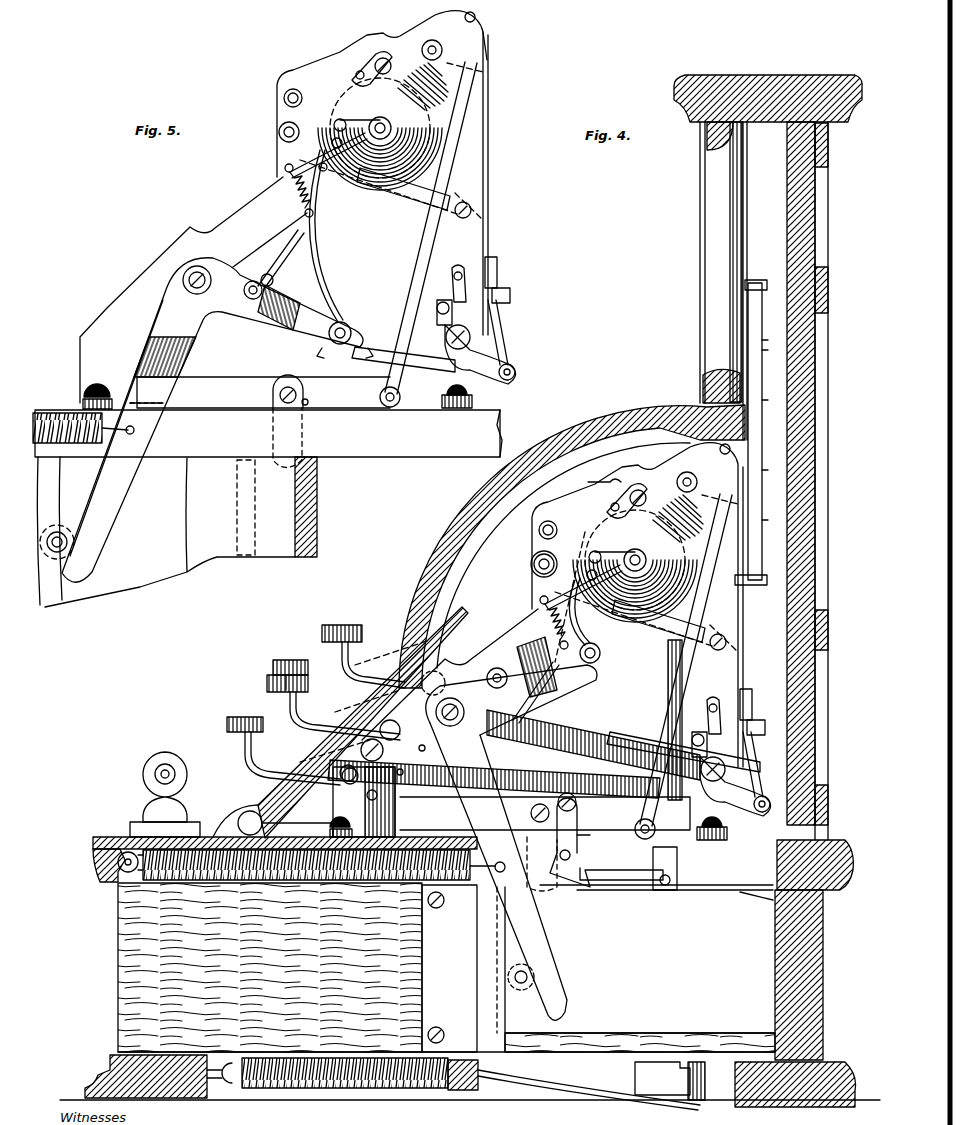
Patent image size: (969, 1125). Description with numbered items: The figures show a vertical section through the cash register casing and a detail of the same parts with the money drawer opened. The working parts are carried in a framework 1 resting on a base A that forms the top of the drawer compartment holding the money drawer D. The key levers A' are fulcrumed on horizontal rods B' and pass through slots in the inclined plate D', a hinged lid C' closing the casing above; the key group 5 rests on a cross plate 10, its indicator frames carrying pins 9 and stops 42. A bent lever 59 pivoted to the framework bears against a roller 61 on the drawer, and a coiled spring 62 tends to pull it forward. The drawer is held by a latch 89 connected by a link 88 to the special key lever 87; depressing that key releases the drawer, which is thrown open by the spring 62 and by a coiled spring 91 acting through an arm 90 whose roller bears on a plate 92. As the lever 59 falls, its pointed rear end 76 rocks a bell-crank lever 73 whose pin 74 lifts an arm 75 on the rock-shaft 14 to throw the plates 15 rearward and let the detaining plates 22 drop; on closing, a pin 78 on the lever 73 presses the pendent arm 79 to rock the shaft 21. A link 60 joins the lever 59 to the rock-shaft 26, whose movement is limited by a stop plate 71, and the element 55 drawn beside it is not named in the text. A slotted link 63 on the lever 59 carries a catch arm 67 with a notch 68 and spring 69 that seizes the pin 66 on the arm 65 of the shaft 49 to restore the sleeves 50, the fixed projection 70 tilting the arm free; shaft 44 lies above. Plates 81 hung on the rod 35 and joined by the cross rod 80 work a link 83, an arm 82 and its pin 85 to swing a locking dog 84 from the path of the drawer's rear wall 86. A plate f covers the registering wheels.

In FIG. 5, the framework 1 is at (284, 207).
In FIG. 4, the framework 1 is at (556, 605).
In FIG. 4, the key group 5 is at (218, 724).
In FIG. 4, the rearwardly projecting pin 9 is at (768, 520).
In FIG. 4, the cross plate 10 is at (760, 588).
In FIG. 5, the rock-shaft 14 is at (512, 378).
In FIG. 4, the rock-shaft 14 is at (766, 792).
In FIG. 5, the plate 15 is at (510, 296).
In FIG. 4, the plate 15 is at (763, 725).
In FIG. 5, the shaft 21 is at (462, 262).
In FIG. 4, the shaft 21 is at (719, 704).
In FIG. 5, the detaining plate 22 is at (497, 272).
In FIG. 4, the detaining plate 22 is at (760, 704).
In FIG. 5, the rock-shaft 26 is at (392, 128).
In FIG. 4, the rock-shaft 26 is at (635, 560).
In FIG. 5, the rod 35 is at (428, 40).
In FIG. 4, the rod 35 is at (700, 477).
In FIG. 4, the stop 42 is at (661, 720).
In FIG. 5, the shaft 44 is at (283, 95).
In FIG. 4, the shaft 44 is at (533, 526).
In FIG. 5, the rock-shaft 49 is at (278, 132).
In FIG. 4, the rock-shaft 49 is at (530, 569).
In FIG. 4, the sleeve 50 is at (532, 564).
In FIG. 5, the spring 55 is at (385, 200).
In FIG. 4, the spring 55 is at (638, 579).
In FIG. 5, the bent lever 59 is at (116, 428).
In FIG. 4, the bent lever 59 is at (498, 871).
In FIG. 5, the link 60 is at (318, 270).
In FIG. 4, the link 60 is at (553, 637).
In FIG. 5, the roller 61 is at (67, 540).
In FIG. 4, the roller 61 is at (527, 988).
In FIG. 5, the coiled spring 62 is at (70, 412).
In FIG. 4, the coiled spring 62 is at (205, 880).
In FIG. 5, the link 63 is at (274, 264).
In FIG. 4, the link 63 is at (540, 660).
In FIG. 5, the arm 65 is at (333, 140).
In FIG. 4, the arm 65 is at (553, 559).
In FIG. 5, the pin 66 is at (330, 166).
In FIG. 5, the catch arm 67 is at (290, 168).
In FIG. 4, the catch arm 67 is at (583, 574).
In FIG. 5, the notch 68 is at (353, 114).
In FIG. 4, the notch 68 is at (612, 543).
In FIG. 5, the spring 69 is at (292, 190).
In FIG. 4, the spring 69 is at (550, 616).
In FIG. 5, the fixed projection 70 is at (352, 78).
In FIG. 4, the fixed projection 70 is at (616, 501).
In FIG. 5, the stop plate 71 is at (414, 193).
In FIG. 4, the stop plate 71 is at (669, 625).
In FIG. 5, the bell-crank lever 73 is at (425, 358).
In FIG. 4, the bell-crank lever 73 is at (683, 751).
In FIG. 5, the pin 74 is at (457, 392).
In FIG. 4, the pin 74 is at (720, 827).
In FIG. 5, the arm 75 is at (508, 364).
In FIG. 4, the arm 75 is at (735, 786).
In FIG. 5, the pointed rear end 76 is at (352, 328).
In FIG. 4, the pointed rear end 76 is at (600, 660).
In FIG. 5, the pin 78 is at (437, 295).
In FIG. 4, the pin 78 is at (697, 733).
In FIG. 5, the pendent arm 79 is at (496, 325).
In FIG. 4, the pendent arm 79 is at (761, 764).
In FIG. 5, the cross rod 80 is at (476, 17).
In FIG. 4, the cross rod 80 is at (731, 439).
In FIG. 5, the plate 81 is at (488, 45).
In FIG. 5, the arm 82 is at (260, 392).
In FIG. 4, the arm 82 is at (545, 813).
In FIG. 5, the link 83 is at (408, 302).
In FIG. 4, the link 83 is at (683, 666).
In FIG. 5, the locking dog 84 is at (282, 470).
In FIG. 4, the locking dog 84 is at (540, 852).
In FIG. 5, the pin 85 is at (309, 402).
In FIG. 4, the pin 85 is at (578, 812).
In FIG. 5, the rear wall 86 is at (318, 495).
In FIG. 4, the special key lever 87 is at (288, 700).
In FIG. 4, the link 88 is at (600, 838).
In FIG. 4, the latch 89 is at (575, 893).
In FIG. 4, the arm 90 is at (582, 1092).
In FIG. 4, the coiled spring 91 is at (350, 1100).
In FIG. 4, the plate 92 is at (640, 1078).
In FIG. 4, the base A is at (768, 446).
In FIG. 4, the key lever A' is at (514, 752).
In FIG. 4, the horizontal rod B' is at (363, 701).
In FIG. 4, the hinged lid C' is at (479, 621).
In FIG. 4, the money drawer D is at (470, 972).
In FIG. 4, the inclined plate D' is at (285, 816).
In FIG. 5, the lever E is at (212, 420).
In FIG. 4, the lever E is at (501, 700).
In FIG. 4, the plate f is at (602, 474).